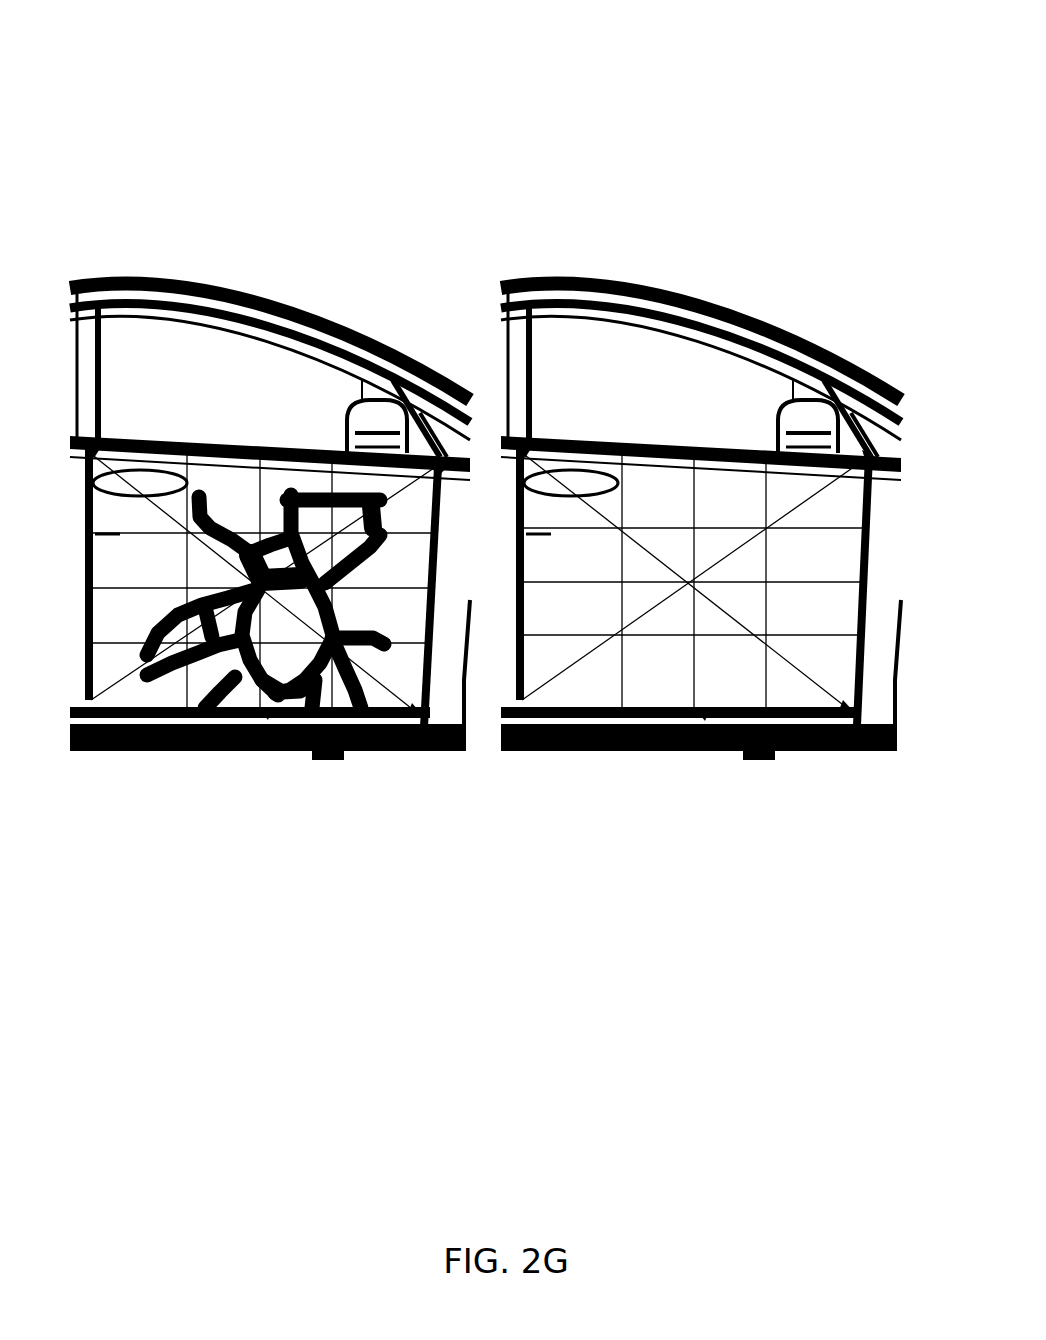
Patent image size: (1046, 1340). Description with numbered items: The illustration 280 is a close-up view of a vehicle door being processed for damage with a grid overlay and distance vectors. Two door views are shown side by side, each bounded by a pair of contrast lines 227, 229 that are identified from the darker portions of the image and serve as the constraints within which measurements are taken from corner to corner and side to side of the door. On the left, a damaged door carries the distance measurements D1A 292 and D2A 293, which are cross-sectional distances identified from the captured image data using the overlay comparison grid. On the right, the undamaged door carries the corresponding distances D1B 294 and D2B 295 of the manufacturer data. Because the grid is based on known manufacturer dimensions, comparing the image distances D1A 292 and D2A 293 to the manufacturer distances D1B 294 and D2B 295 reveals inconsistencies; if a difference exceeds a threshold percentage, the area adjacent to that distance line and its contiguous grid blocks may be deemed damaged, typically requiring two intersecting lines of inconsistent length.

The illustration 280 is at (44, 24).
The contrast line 227 is at (521, 445).
The contrast line 229 is at (872, 455).
The distance D1A 292 is at (421, 717).
The distance D2A 293 is at (266, 716).
The distance D1B 294 is at (852, 716).
The distance D2B 295 is at (703, 716).